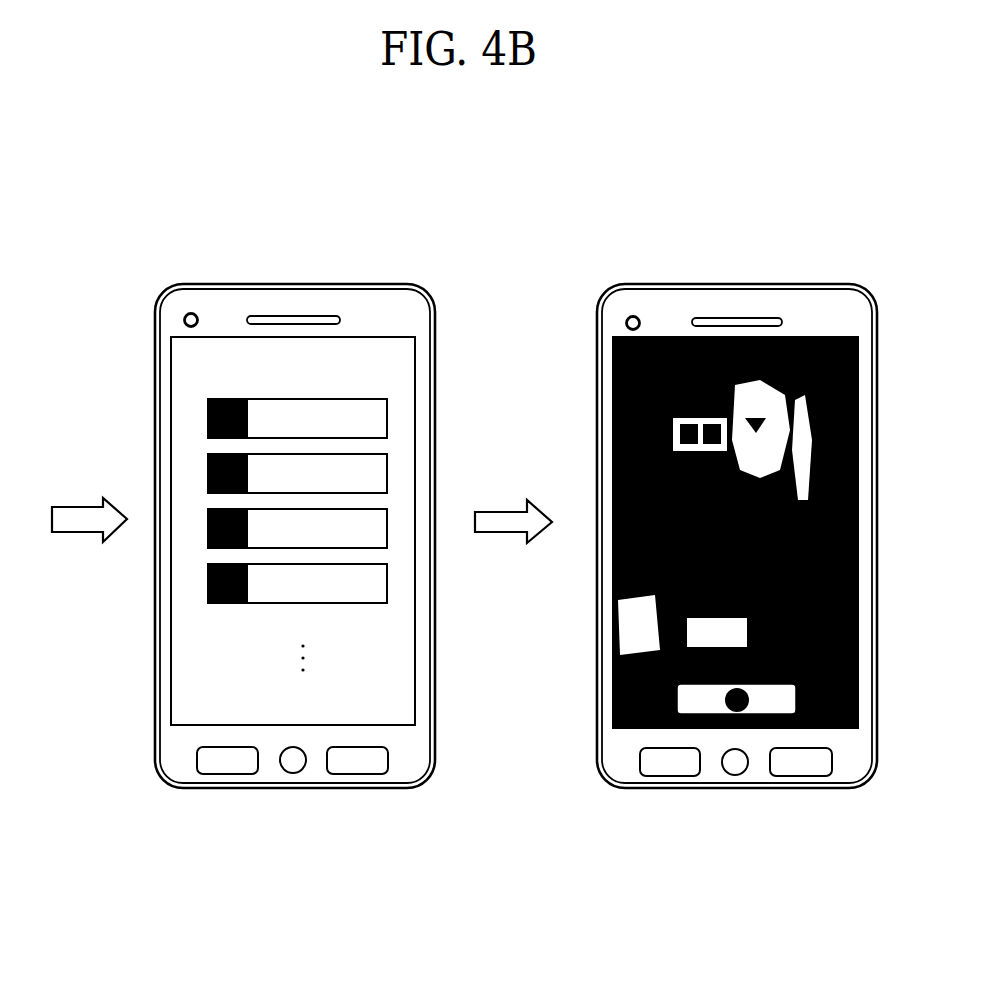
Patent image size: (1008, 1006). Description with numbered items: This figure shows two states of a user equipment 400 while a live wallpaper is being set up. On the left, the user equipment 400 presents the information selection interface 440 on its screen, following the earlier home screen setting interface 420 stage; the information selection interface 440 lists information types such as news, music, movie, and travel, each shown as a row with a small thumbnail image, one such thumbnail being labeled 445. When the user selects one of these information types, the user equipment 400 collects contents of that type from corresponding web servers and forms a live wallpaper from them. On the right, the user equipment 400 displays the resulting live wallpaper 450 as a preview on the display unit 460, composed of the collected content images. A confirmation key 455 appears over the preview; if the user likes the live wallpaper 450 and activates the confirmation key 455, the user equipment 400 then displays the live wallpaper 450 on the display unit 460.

The user equipment 400 is at (401, 184).
The home screen setting interface 420 is at (388, 338).
The information selection interface 440 is at (288, 347).
The category thumbnail item 445 is at (208, 418).
The live wallpaper 450 is at (737, 337).
The confirmation key 455 is at (769, 708).
The display unit 460 is at (828, 337).